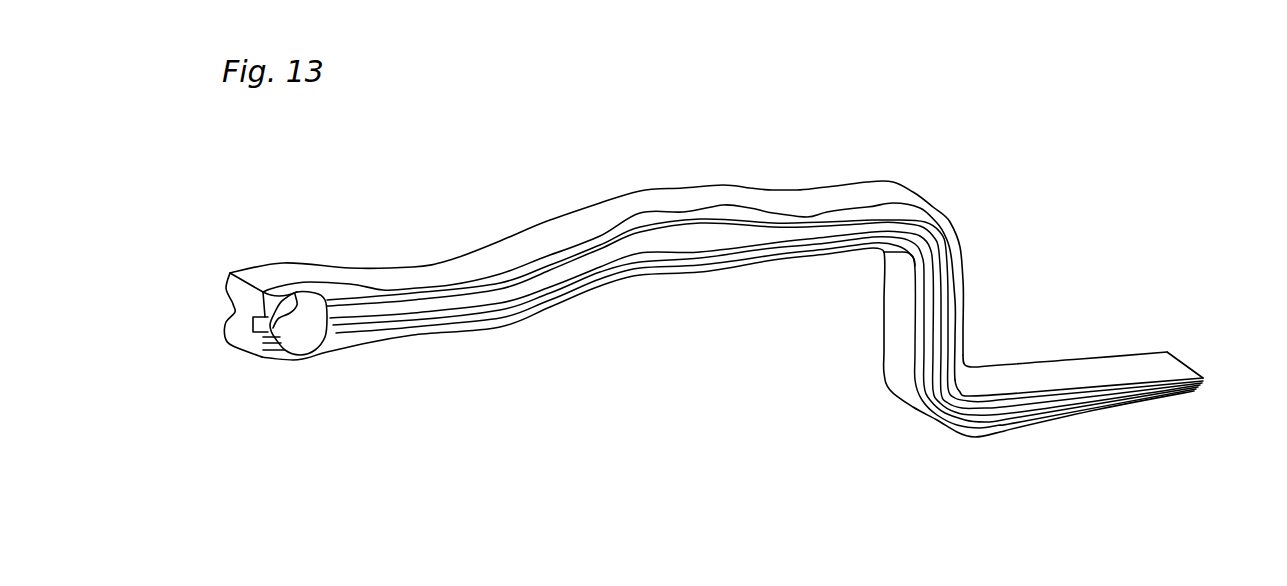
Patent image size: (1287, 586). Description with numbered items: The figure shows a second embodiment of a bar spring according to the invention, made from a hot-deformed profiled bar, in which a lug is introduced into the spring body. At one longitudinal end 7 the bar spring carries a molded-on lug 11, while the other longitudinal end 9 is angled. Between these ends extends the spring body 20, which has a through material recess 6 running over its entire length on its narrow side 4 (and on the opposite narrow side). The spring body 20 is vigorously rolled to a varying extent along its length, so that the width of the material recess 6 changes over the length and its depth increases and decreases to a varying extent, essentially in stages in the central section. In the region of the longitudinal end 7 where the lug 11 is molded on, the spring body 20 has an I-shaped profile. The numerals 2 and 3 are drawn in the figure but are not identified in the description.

The spring body 20 is at (667, 150).
The band / strip 2 is at (823, 197).
The vertical bent section 3 is at (903, 383).
The narrow side 4 is at (514, 312).
The material recess 6 is at (691, 244).
The longitudinal end 7 is at (202, 374).
The longitudinal end 9 is at (1220, 333).
The lug 11 is at (300, 346).